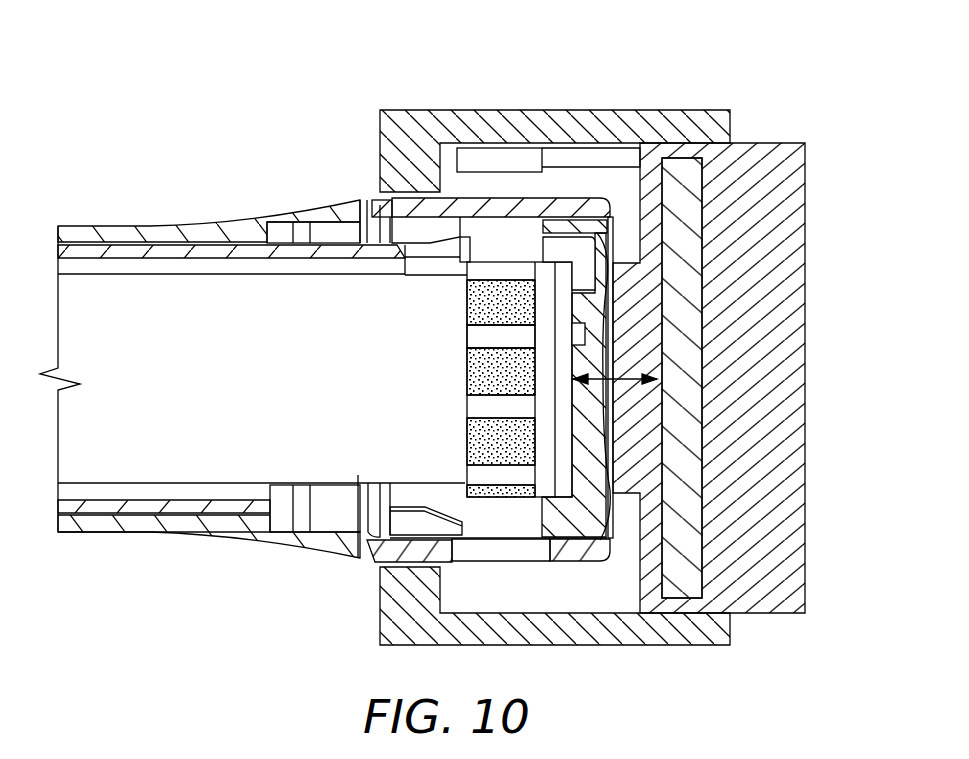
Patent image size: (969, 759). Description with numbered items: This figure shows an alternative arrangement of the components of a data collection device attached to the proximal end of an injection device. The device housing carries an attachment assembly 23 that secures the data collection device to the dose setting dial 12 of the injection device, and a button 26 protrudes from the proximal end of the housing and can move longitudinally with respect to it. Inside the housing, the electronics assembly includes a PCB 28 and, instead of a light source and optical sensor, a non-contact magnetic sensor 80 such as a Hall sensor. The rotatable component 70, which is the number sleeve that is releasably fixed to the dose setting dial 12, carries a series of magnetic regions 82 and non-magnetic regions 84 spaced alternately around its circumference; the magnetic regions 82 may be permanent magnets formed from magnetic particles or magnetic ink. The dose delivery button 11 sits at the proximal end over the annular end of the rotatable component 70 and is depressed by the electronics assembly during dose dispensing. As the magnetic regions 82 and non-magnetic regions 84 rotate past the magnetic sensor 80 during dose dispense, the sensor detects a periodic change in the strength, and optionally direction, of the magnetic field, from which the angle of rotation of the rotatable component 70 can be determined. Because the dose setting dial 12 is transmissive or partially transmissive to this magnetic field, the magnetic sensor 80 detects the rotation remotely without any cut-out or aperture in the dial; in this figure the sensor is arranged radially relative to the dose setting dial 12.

The attachment assembly 23 is at (380, 121).
The non-contact magnetic sensor 80 is at (498, 148).
The dose setting dial 12 is at (378, 203).
The magnetic regions 82 is at (467, 302).
The non-magnetic regions 84 is at (480, 338).
The rotatable component 70 is at (467, 378).
The dose delivery button 11 is at (548, 512).
The PCB 28 is at (662, 580).
The button 26 is at (805, 408).